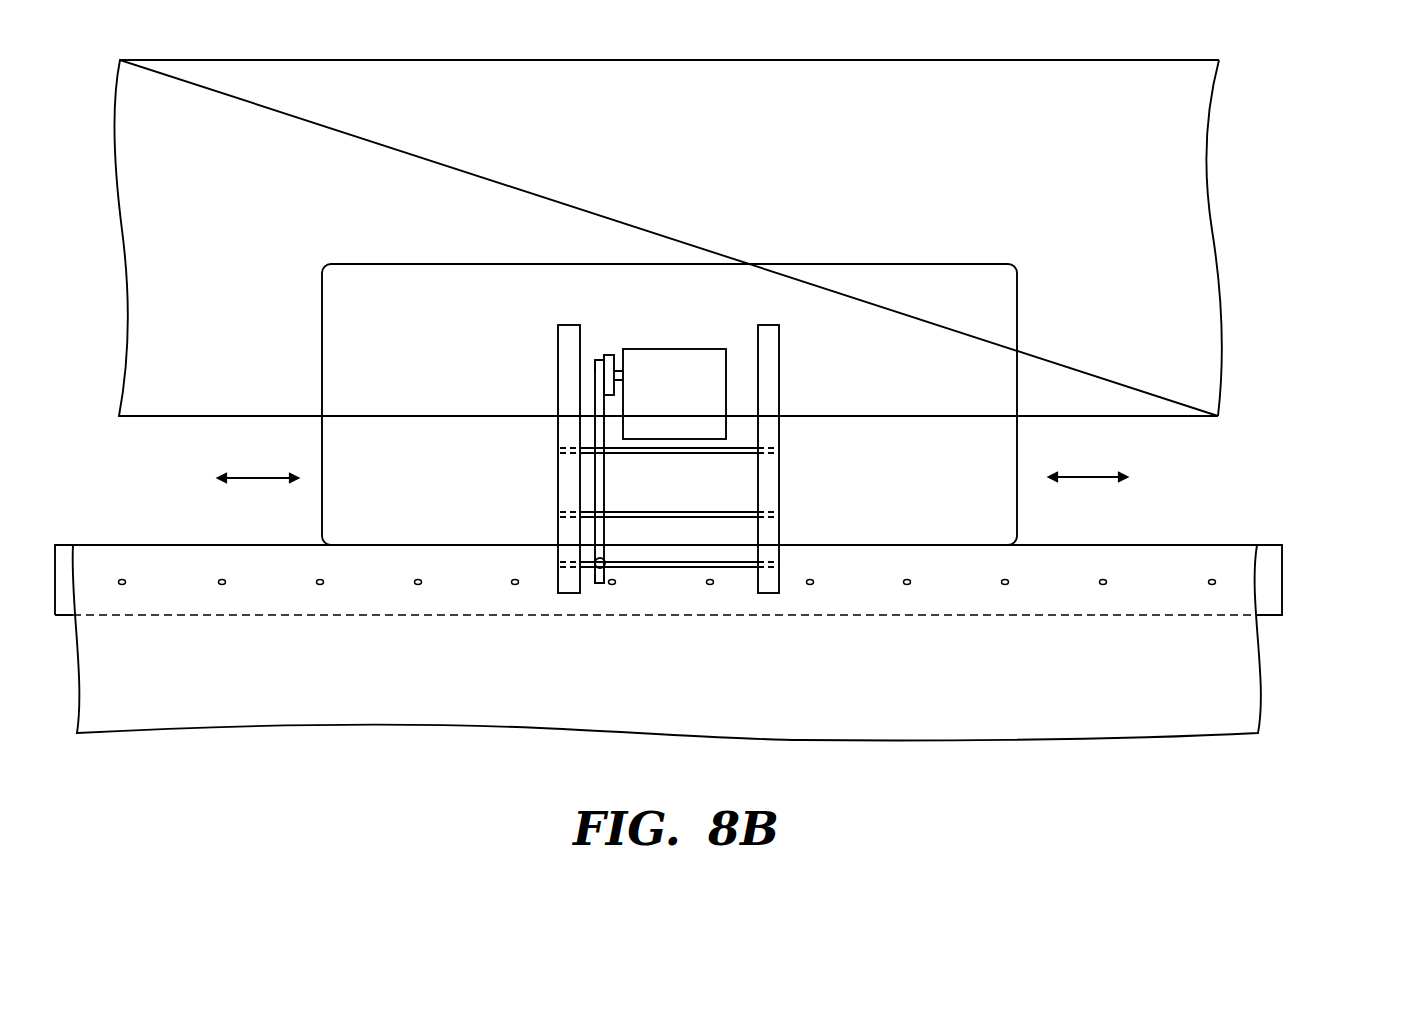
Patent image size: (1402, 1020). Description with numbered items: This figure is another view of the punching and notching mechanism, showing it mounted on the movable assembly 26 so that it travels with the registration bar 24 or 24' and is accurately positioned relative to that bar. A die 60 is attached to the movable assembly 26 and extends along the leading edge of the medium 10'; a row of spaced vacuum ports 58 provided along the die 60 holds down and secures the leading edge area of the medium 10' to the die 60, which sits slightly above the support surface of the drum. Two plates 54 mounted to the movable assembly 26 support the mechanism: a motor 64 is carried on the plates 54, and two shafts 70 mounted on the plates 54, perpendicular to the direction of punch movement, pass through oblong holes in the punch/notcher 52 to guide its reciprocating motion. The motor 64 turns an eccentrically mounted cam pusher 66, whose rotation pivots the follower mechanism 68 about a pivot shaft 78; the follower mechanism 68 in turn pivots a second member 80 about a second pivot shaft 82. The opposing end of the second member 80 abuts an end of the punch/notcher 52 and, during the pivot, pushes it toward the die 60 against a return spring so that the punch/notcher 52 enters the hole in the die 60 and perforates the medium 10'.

The registration bar 24 is at (756, 238).
The registration bar 24' is at (1213, 238).
The movable assembly 26 is at (973, 450).
The medium 10' is at (733, 642).
The die 60 is at (1265, 578).
The vacuum ports 58 is at (222, 578).
The plates 54 is at (768, 333).
The pivot shaft 78 is at (739, 449).
The second pivot shaft 82 is at (723, 515).
The shafts 70 is at (722, 565).
The second member 80 is at (598, 477).
The follower mechanism 68 is at (600, 360).
The punch/notcher 52 is at (596, 564).
The cam pusher 66 is at (610, 355).
The motor 64 is at (668, 385).